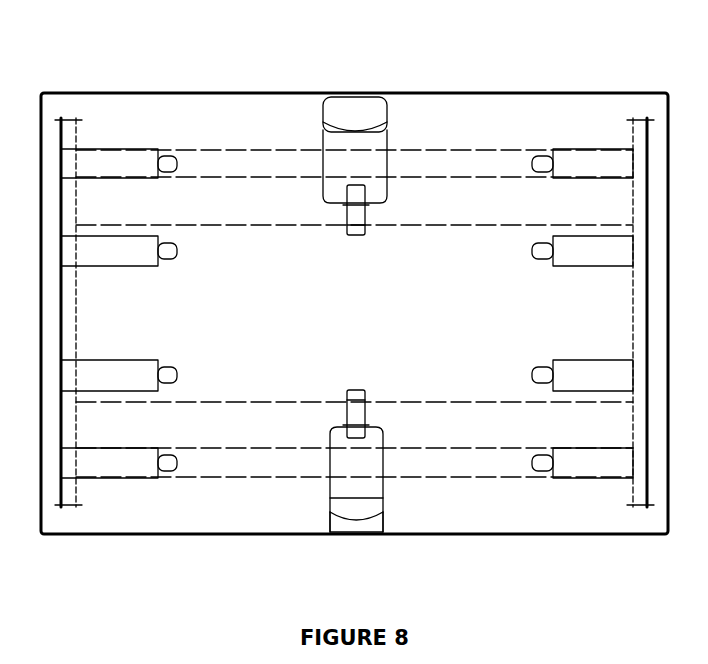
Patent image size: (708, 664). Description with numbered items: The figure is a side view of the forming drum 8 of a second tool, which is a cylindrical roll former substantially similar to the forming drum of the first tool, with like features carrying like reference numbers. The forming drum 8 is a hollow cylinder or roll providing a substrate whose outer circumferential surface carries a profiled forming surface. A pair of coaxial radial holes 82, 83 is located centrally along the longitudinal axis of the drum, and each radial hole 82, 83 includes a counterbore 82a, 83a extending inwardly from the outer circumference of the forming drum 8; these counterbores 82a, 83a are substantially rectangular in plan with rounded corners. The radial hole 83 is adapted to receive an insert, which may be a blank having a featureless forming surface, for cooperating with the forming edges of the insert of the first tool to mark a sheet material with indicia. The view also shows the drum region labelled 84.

The forming drum 8 is at (200, 72).
The radial hole 82 is at (344, 87).
The counterbore 82a is at (365, 93).
The radial hole 83 is at (341, 539).
The counterbore 83a is at (358, 533).
The guide rails 84 is at (442, 460).